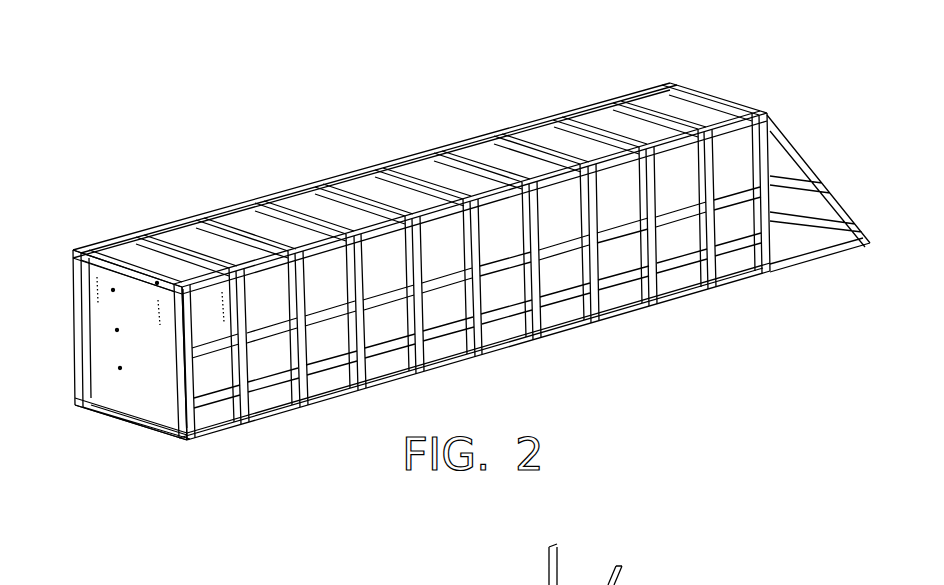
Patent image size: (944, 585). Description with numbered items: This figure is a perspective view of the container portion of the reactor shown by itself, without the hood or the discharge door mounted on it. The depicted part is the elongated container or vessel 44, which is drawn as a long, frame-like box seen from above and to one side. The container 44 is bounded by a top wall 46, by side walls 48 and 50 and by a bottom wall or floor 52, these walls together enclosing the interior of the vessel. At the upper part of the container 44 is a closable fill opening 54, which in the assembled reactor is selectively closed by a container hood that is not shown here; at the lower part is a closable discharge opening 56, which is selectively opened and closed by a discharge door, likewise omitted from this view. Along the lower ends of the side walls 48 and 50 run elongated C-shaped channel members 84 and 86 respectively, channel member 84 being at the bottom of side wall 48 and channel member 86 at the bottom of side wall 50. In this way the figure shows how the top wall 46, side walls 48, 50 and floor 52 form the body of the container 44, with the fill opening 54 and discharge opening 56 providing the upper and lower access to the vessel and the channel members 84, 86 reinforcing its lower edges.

The elongated container or vessel 44 is at (548, 116).
The top wall 46 is at (350, 178).
The side wall 48 is at (505, 289).
The side wall 50 is at (157, 326).
The bottom wall or floor 52 is at (137, 427).
The closable fill opening 54 is at (820, 156).
The closable discharge opening 56 is at (88, 352).
The C-shaped channel member 84 is at (340, 402).
The C-shaped channel member 86 is at (83, 408).